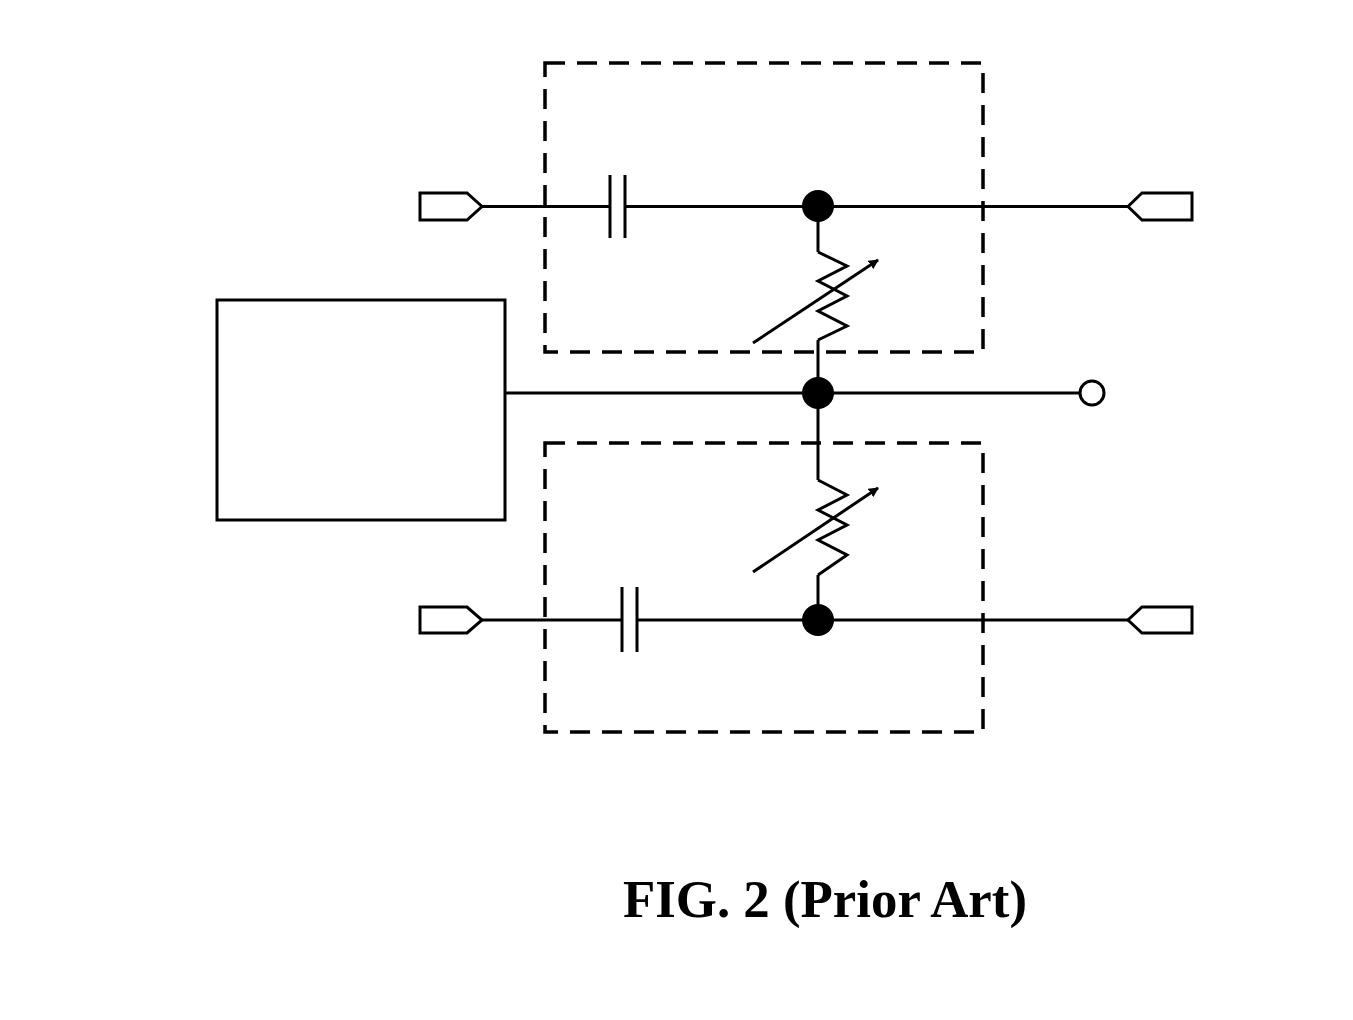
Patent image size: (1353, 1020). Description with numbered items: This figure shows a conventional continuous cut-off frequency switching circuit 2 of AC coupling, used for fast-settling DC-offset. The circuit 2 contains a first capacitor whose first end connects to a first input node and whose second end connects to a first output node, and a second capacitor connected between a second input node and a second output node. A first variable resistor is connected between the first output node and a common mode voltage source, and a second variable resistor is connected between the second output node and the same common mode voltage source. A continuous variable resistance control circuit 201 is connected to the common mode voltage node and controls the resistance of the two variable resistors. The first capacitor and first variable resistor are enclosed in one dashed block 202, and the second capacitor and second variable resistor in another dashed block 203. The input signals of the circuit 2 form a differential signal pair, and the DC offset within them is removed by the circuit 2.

The continuous cut-off frequency switching circuit 2 is at (751, 333).
The continuous variable resistance control circuit 201 is at (217, 503).
The first RC filter unit 202 is at (983, 153).
The second RC filter unit 203 is at (983, 727).